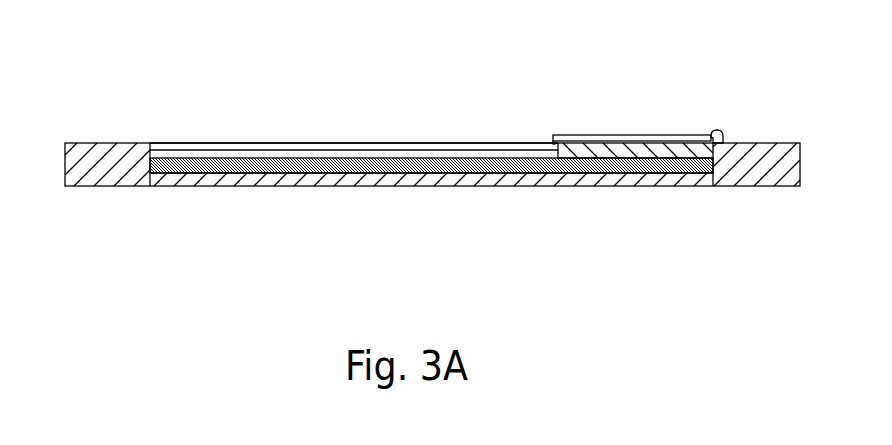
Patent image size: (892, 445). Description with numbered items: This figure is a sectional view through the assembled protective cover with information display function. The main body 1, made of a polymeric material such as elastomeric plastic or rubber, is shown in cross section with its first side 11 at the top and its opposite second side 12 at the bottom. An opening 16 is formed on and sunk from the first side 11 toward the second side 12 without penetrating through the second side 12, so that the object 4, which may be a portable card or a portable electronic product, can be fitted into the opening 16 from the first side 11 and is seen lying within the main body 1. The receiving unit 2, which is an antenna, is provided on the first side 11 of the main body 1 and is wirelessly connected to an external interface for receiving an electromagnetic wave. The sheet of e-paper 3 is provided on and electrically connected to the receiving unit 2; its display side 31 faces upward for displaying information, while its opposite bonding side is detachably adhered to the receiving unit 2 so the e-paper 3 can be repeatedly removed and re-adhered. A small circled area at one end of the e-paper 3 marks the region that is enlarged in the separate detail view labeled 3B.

The main body 1 is at (775, 134).
The receiving unit 2 is at (142, 145).
The opening 16 is at (275, 147).
The object 4 is at (279, 175).
The second side 12 is at (607, 185).
The display side 31 is at (588, 142).
The e-paper 3 is at (560, 137).
The hook end of plate 3B is at (707, 135).
The first side 11 is at (742, 143).